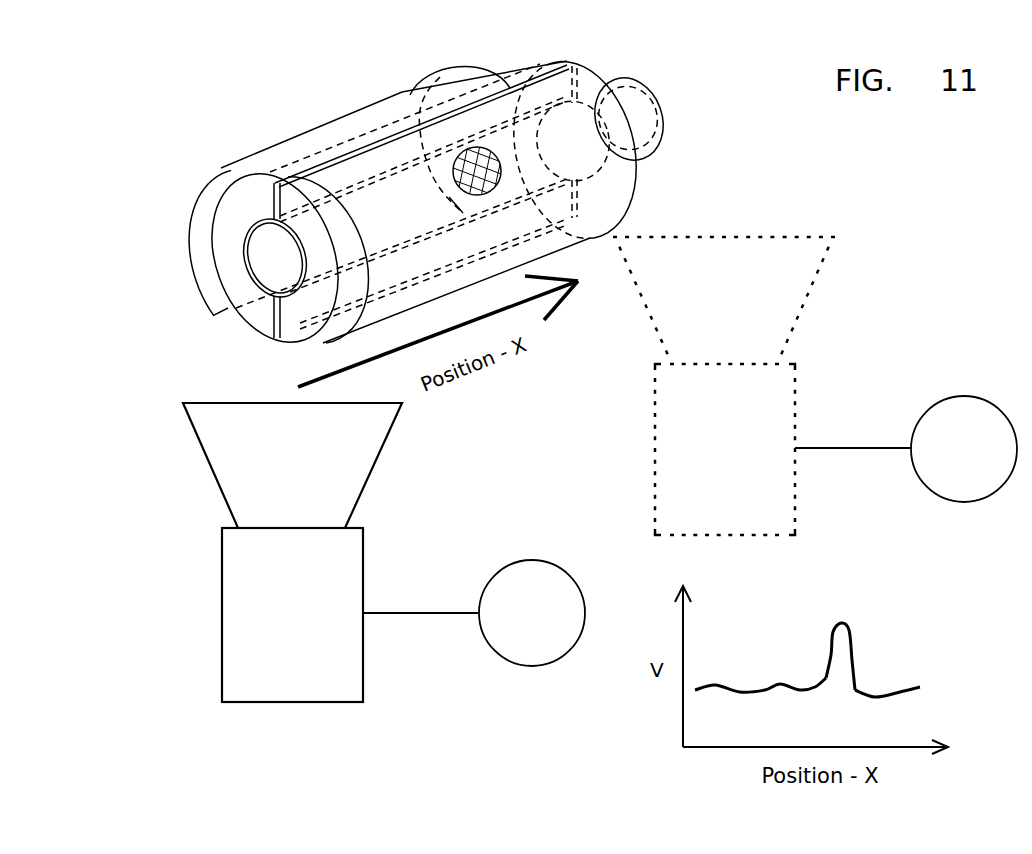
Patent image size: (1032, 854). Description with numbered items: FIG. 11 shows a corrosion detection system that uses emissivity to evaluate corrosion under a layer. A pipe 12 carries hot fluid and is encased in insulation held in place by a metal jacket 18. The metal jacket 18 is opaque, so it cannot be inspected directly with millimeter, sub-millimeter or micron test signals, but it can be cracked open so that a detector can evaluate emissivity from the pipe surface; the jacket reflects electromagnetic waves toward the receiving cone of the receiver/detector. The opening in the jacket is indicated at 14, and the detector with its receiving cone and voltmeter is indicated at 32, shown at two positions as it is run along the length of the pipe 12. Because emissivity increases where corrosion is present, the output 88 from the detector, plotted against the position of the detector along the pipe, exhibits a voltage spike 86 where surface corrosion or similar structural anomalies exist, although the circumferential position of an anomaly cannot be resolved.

The pipe 12 is at (243, 246).
The mesh-covered window 14 is at (406, 96).
The metal jacket 18 is at (214, 182).
The detector 32 is at (247, 633).
The voltage spike 86 is at (848, 625).
The output 88 is at (782, 651).